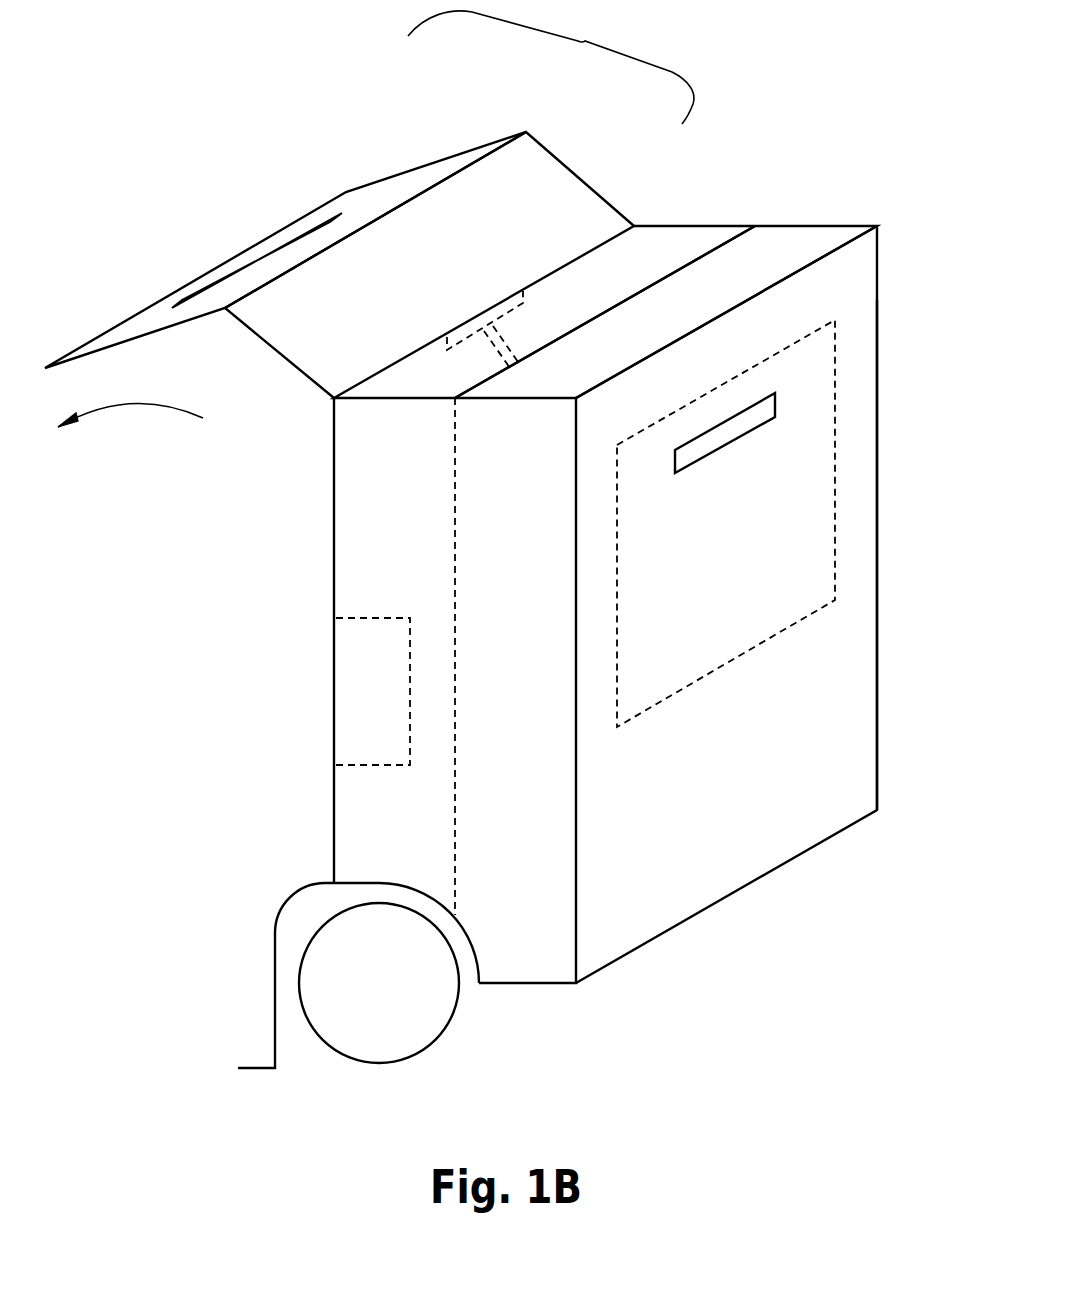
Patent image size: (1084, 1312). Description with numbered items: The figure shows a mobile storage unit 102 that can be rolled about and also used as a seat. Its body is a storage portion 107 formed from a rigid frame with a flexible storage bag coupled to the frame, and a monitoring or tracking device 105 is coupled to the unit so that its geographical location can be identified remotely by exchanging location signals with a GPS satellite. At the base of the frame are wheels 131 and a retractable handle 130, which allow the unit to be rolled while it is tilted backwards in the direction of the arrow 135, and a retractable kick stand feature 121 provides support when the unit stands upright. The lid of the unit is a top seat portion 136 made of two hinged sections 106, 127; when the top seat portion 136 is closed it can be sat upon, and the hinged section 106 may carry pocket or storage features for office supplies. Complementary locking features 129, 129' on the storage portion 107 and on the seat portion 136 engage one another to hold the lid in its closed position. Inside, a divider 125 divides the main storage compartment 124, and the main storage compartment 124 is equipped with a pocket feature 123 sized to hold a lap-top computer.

The mobile storage unit 102 is at (235, 112).
The monitoring or tracking device 105 is at (371, 697).
The hinged section 106 is at (558, 188).
The storage portion 107 is at (877, 755).
The kick stand feature 121 is at (275, 985).
The pocket feature 123 is at (835, 538).
The main storage compartment 124 is at (804, 268).
The divider 125 is at (712, 250).
The hinged section 127 is at (465, 152).
The locking feature 129 is at (725, 463).
The complementary locking feature 129' is at (257, 231).
The retractable handle 130 is at (443, 340).
The wheels 131 is at (405, 1063).
The arrow 135 is at (133, 406).
The top seat portion 136 is at (551, 64).